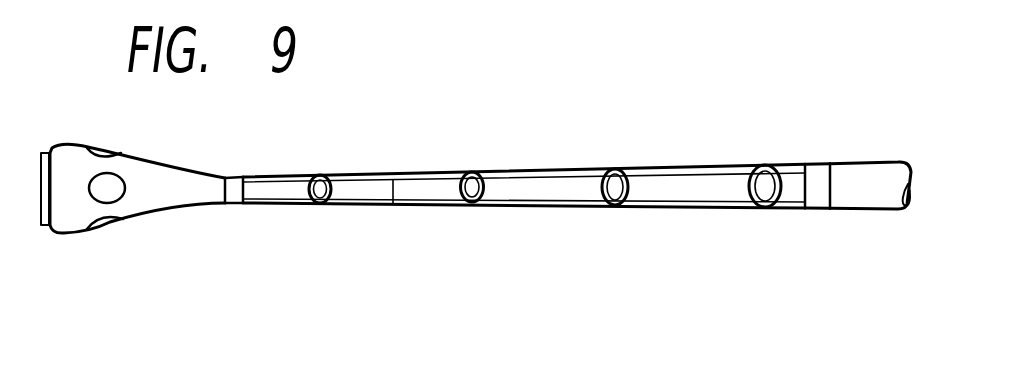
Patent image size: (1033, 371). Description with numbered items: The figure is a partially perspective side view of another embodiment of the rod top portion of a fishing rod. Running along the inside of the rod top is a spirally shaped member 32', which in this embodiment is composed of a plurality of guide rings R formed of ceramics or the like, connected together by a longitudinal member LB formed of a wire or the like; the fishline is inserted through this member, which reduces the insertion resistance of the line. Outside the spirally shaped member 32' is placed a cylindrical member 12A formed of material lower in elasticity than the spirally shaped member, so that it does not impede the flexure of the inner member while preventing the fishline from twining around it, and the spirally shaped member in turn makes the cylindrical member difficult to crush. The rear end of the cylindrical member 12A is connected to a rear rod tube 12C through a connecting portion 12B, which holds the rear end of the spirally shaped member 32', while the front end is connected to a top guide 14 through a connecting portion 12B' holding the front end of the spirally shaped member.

The top guide 14 is at (172, 180).
The connecting portion 12B' is at (246, 230).
The cylindrical member 12A is at (682, 210).
The connecting portion 12B is at (815, 226).
The rear rod tube 12C is at (866, 200).
The guide rings R is at (476, 200).
The longitudinal member LB is at (393, 182).
The spirally shaped member 32' is at (441, 315).